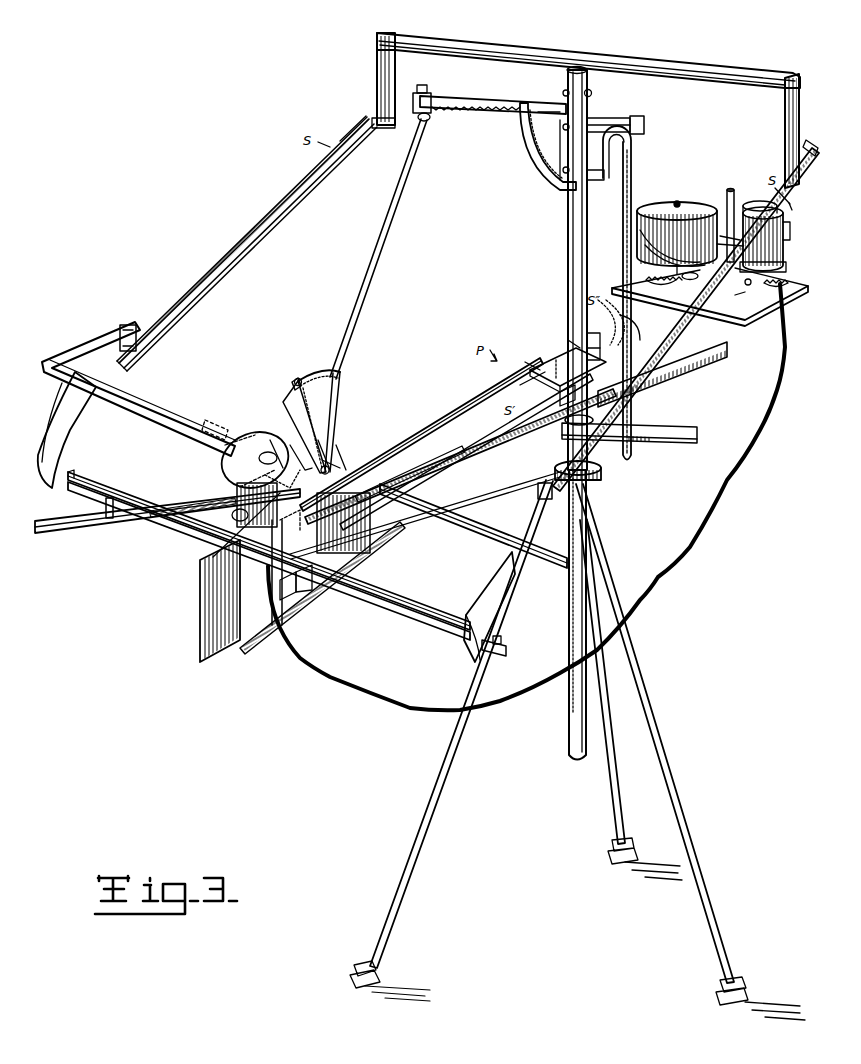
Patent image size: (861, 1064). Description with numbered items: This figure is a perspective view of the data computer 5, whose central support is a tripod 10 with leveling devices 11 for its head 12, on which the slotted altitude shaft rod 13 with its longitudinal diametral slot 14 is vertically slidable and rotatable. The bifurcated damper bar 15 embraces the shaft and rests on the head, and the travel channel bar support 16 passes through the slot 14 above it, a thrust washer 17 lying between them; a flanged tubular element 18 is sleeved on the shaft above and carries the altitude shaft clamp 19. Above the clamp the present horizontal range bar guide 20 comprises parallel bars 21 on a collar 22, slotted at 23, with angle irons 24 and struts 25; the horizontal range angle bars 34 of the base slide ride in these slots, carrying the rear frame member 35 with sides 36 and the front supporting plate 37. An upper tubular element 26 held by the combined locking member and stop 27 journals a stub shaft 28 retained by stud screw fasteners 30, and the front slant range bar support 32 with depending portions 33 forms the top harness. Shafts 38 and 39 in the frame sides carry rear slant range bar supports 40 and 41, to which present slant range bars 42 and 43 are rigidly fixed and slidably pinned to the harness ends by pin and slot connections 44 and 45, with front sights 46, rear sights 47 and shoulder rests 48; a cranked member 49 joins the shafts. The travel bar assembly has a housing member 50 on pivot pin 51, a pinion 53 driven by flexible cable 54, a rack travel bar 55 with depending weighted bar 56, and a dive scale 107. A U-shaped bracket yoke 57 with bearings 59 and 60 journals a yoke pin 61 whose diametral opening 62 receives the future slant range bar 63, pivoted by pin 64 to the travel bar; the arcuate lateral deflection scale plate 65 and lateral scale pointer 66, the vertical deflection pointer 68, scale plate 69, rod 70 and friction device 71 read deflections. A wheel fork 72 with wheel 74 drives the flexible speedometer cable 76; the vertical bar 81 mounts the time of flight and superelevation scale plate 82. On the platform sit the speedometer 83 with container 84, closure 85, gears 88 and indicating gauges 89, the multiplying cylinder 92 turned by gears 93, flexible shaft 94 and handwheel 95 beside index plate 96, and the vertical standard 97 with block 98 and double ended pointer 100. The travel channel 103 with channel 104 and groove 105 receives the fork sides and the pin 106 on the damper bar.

The machine 5 is at (785, 190).
The tripod 10 is at (646, 676).
The leveling devices 11 is at (356, 964).
The tripod head 12 is at (600, 464).
The altitude shaft rod 13 is at (582, 738).
The longitudinal diametral slot 14 is at (572, 702).
The bifurcated damper bar 15 is at (120, 520).
The travel channel bar support 16 is at (255, 622).
The thrust washer 17 is at (565, 440).
The tubular element 18 is at (568, 422).
The altitude shaft clamp 19 is at (560, 395).
The present horizontal range bar guide 20 is at (568, 370).
The parallel bars 21 is at (524, 364).
The collar 22 is at (600, 345).
The slots 23 is at (550, 356).
The angle iron 24 is at (653, 376).
The struts 25 is at (602, 351).
The tubular element 26 is at (588, 78).
The combined locking member and stop 27 is at (600, 180).
The stub shaft 28 is at (567, 71).
The stud screw fasteners 30 is at (592, 93).
The front slant range bar support 32 is at (725, 71).
The depending portions 33 is at (378, 72).
The horizontal range angle bars 34 is at (446, 413).
The frame member 35 is at (343, 524).
The frame sides 36 is at (236, 492).
The supporting plate 37 is at (756, 316).
The shaft 38 is at (220, 425).
The shaft 39 is at (414, 466).
The rear slant range bar support 40 is at (165, 406).
The rear slant range bar support 41 is at (486, 530).
The present slant range bar 42 is at (282, 192).
The present slant range bar 43 is at (745, 293).
The pin and slot connection 44 is at (800, 172).
The pin and slot connection 45 is at (347, 144).
The front sights 46 is at (810, 140).
The rear sights 47 is at (127, 327).
The shoulder rests 48 is at (80, 443).
The cranked member 49 is at (285, 522).
The housing member 50 is at (640, 118).
The pivot pin 51 is at (563, 130).
The pinion 53 is at (610, 118).
The flexible cable 54 is at (622, 215).
The travel bar 55 is at (480, 97).
The depending weighted bar 56 is at (630, 186).
The U-shaped bracket yoke 57 is at (300, 455).
The bearing 59 is at (262, 461).
The bearing 60 is at (332, 456).
The yoke pin 61 is at (278, 450).
The diametral opening 62 is at (325, 458).
The future slant range bar 63 is at (357, 296).
The pin 64 is at (420, 120).
The arcuate lateral deflection scale plate 65 is at (224, 456).
The lateral scale pointer 66 is at (282, 480).
The vertical deflection pointer 68 is at (307, 408).
The vertical deflection scale plate 69 is at (333, 370).
The rod 70 is at (295, 380).
The friction device 71 is at (300, 378).
The wheel fork 72 is at (290, 596).
The wheel 74 is at (308, 590).
The flexible speedometer cable 76 is at (345, 686).
The vertical bar 81 is at (270, 578).
The time of flight and superelevation scale plate 82 is at (200, 622).
The speedometer 83 is at (789, 226).
The cylindrical container 84 is at (782, 245).
The removable closure 85 is at (752, 203).
The gears 88 is at (770, 287).
The indicating gauges 89 is at (787, 268).
The multiplying cylinder 92 is at (660, 206).
The intermeshing gears 93 is at (660, 286).
The flexible shaft 94 is at (630, 328).
The handwheel 95 is at (231, 514).
The index plate 96 is at (218, 498).
The vertical standard 97 is at (730, 190).
The block 98 is at (697, 281).
The double ended pointer 100 is at (725, 232).
The travel channel 103 is at (418, 602).
The channel 104 is at (385, 584).
The groove 105 is at (500, 650).
The pin 106 is at (106, 502).
The dive scale 107 is at (520, 132).